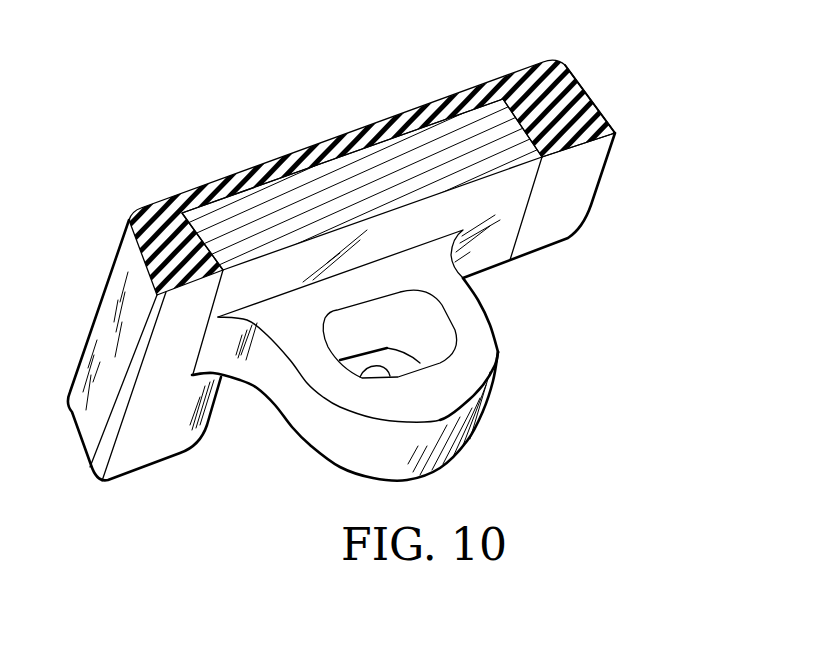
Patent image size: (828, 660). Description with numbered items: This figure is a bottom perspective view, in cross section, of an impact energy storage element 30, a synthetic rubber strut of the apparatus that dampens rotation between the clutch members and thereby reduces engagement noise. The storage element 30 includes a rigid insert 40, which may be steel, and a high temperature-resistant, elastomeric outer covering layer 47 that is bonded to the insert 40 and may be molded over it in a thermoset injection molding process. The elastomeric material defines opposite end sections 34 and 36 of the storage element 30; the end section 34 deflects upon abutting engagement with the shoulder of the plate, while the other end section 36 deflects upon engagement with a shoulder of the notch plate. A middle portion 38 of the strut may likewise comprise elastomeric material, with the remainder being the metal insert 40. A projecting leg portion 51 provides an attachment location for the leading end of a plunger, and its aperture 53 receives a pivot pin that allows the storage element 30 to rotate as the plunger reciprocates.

The impact energy storage element 30 is at (520, 58).
The end section 34 is at (140, 208).
The end section 36 is at (588, 92).
The middle portion 38 is at (355, 132).
The rigid insert 40 is at (503, 203).
The outer covering layer 47 is at (612, 111).
The projecting leg portion 51 is at (490, 417).
The aperture 53 is at (374, 366).